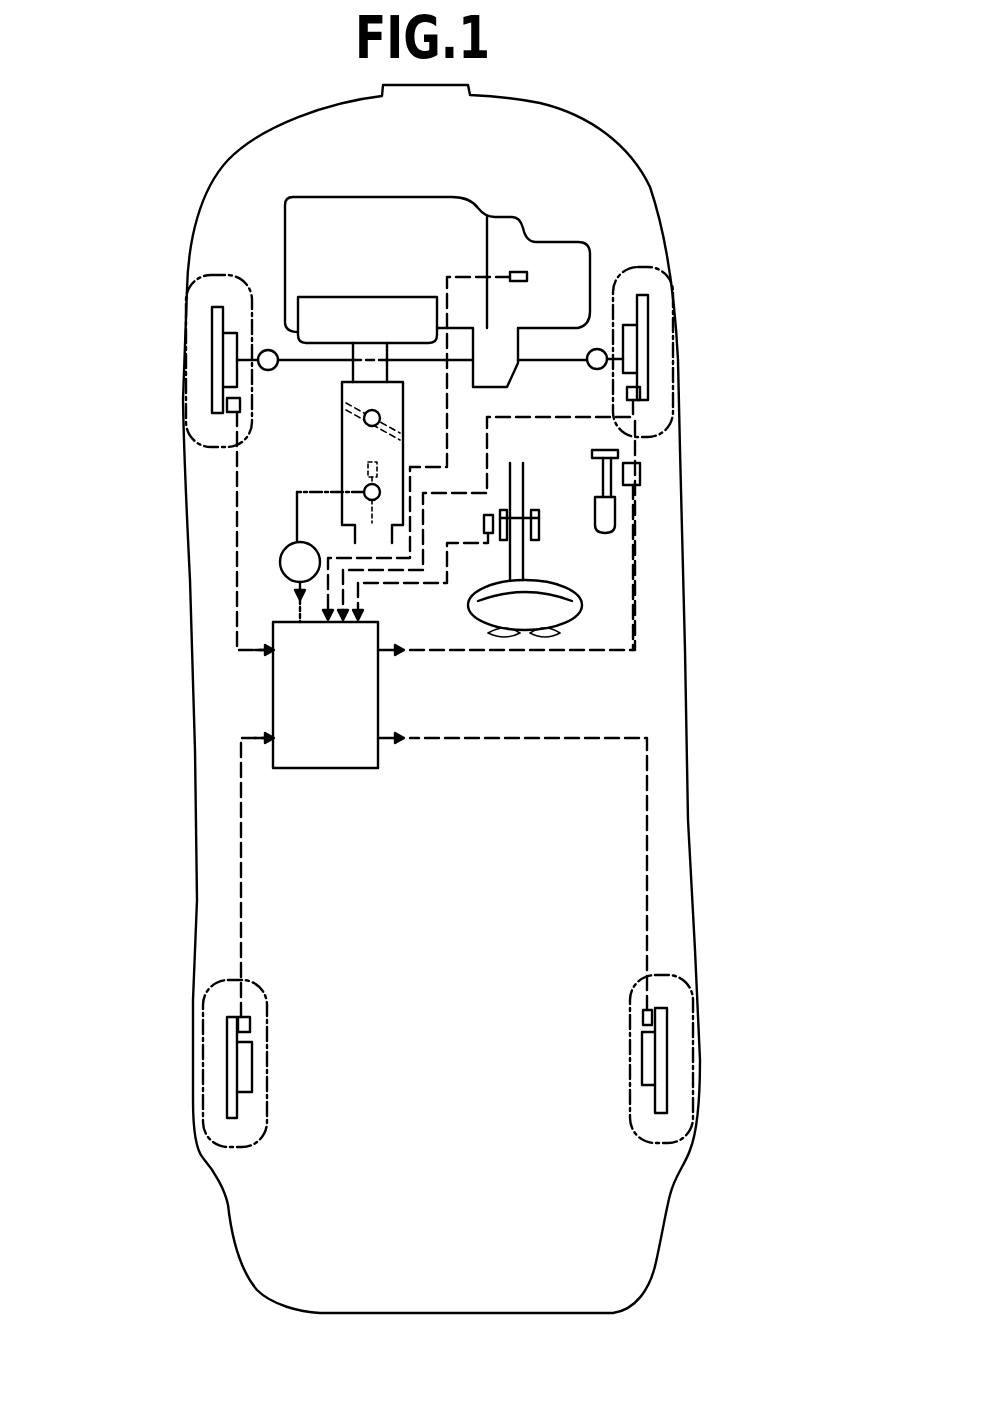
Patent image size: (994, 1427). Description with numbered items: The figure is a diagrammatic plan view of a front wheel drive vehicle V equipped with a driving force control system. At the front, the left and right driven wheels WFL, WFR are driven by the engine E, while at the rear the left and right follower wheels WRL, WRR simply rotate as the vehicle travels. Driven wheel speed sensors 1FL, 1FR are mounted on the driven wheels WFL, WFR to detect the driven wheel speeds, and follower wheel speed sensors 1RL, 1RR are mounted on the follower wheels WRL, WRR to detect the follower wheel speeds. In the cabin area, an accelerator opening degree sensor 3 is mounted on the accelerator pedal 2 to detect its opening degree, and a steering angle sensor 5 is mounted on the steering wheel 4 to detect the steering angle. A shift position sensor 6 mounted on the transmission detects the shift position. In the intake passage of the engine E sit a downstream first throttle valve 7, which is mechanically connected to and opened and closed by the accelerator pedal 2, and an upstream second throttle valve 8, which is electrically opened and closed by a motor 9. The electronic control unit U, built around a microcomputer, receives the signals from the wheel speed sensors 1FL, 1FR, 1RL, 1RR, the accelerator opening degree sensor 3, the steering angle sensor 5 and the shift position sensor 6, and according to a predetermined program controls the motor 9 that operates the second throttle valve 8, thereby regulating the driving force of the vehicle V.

The driven wheel speed sensor 1FL is at (228, 405).
The driven wheel speed sensor 1FR is at (645, 392).
The follower wheel speed sensor 1RL is at (250, 1022).
The follower wheel speed sensor 1RR is at (645, 1015).
The accelerator pedal 2 is at (597, 508).
The accelerator opening degree sensor 3 is at (641, 476).
The steering wheel 4 is at (545, 590).
The steering angle sensor 5 is at (484, 525).
The shift position sensor 6 is at (527, 276).
The first throttle valve 7 is at (362, 420).
The second throttle valve 8 is at (362, 487).
The motor 9 is at (290, 545).
The engine E is at (373, 190).
The electronic control unit U is at (342, 712).
The vehicle V is at (687, 718).
The driven wheel WFL is at (190, 287).
The driven wheel WFR is at (676, 333).
The follower wheel WRL is at (203, 1045).
The follower wheel WRR is at (738, 1022).